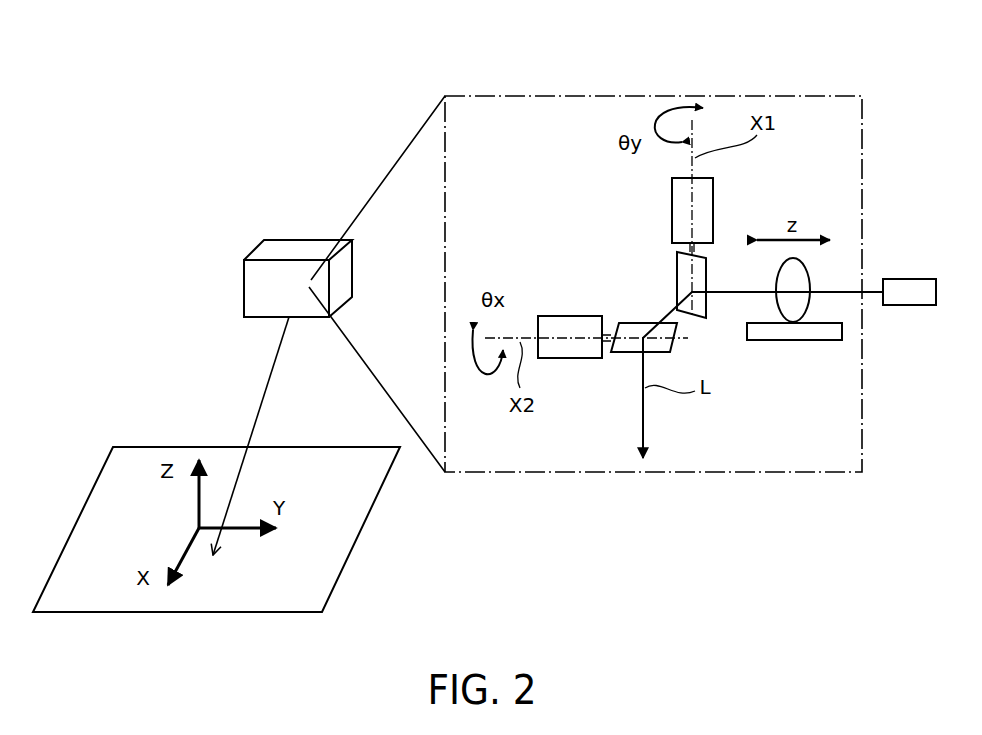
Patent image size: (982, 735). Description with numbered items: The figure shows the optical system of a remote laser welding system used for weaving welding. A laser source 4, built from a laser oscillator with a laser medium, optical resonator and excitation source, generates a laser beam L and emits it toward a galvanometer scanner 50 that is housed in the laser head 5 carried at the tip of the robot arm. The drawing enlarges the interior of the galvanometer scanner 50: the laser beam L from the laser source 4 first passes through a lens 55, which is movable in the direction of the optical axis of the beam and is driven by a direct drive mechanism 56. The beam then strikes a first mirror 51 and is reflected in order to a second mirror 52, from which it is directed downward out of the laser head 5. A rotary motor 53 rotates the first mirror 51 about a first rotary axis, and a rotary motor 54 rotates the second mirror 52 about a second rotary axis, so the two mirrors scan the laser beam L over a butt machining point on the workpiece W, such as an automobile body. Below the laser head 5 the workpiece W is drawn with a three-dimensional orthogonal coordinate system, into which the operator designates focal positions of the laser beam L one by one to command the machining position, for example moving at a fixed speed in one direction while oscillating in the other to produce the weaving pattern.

The laser source 4 is at (907, 279).
The laser head 5 is at (278, 238).
The galvanometer scanner 50 is at (510, 95).
The first mirror 51 is at (676, 287).
The second mirror 52 is at (634, 322).
The rotary motor 53 is at (713, 210).
The rotary motor 54 is at (551, 316).
The lens 55 is at (810, 282).
The direct drive mechanism 56 is at (820, 340).
The laser beam L is at (265, 372).
The workpiece W is at (145, 447).